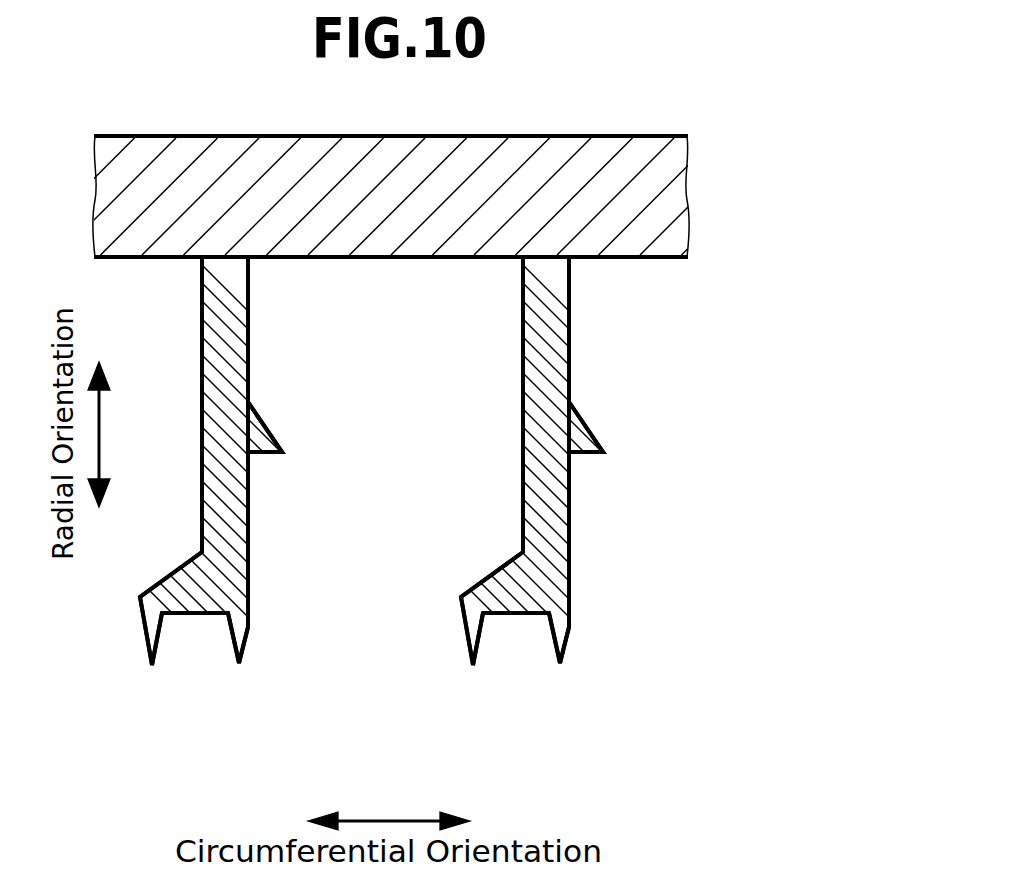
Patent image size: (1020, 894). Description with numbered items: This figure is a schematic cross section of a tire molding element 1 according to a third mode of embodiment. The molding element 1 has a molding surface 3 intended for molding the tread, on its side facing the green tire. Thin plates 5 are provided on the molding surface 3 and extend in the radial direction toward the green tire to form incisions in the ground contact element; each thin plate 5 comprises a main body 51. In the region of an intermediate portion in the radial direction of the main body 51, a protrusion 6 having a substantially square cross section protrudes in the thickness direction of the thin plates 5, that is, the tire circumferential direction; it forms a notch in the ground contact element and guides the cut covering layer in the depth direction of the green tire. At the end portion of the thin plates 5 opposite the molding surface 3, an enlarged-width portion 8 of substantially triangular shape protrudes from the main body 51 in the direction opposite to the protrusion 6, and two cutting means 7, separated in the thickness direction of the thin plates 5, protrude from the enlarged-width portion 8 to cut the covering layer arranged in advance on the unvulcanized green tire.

The tire molding element 1 is at (610, 228).
The molding surface 3 is at (622, 259).
The thin plates 5 is at (250, 290).
The protrusion 6 is at (265, 440).
The main body 51 is at (540, 512).
The enlarged-width portion 8 is at (237, 573).
The cutting means 7 is at (153, 667).